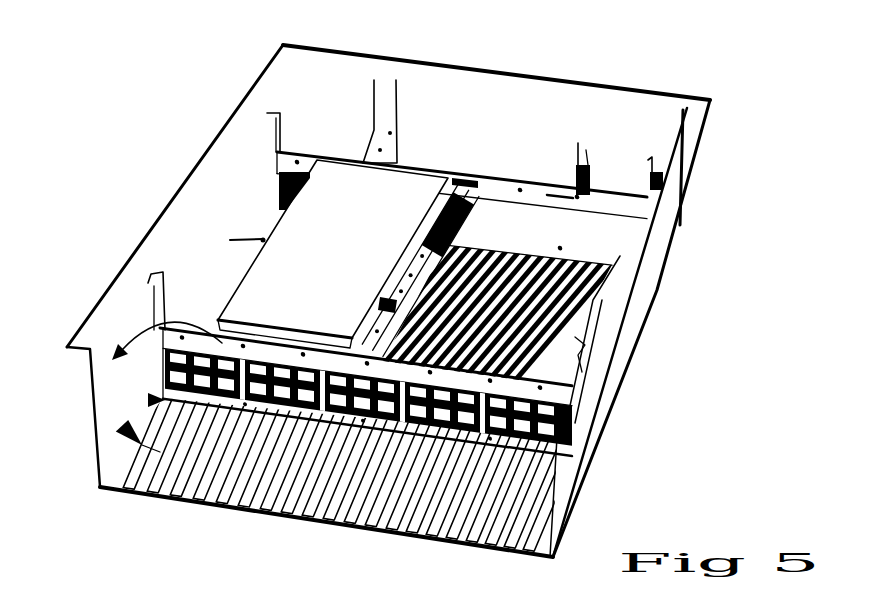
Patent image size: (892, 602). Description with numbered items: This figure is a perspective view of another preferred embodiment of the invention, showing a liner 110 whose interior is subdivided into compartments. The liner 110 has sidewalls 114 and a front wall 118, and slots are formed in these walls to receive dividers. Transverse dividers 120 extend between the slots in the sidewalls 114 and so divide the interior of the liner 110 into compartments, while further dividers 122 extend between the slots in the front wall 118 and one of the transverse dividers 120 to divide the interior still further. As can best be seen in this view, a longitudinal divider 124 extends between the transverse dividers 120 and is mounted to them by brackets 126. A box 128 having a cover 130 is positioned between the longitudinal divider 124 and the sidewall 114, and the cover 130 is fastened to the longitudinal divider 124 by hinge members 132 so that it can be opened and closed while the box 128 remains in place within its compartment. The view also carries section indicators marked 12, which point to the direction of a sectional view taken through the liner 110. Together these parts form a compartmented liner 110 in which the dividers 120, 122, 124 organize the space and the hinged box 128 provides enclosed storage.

The view direction indicator 12 is at (406, 260).
The liner 110 is at (465, 333).
The sidewalls 114 is at (386, 301).
The front wall 118 is at (496, 53).
The dividers 120 is at (440, 285).
The dividers 122 is at (462, 166).
The longitudinal divider 124 is at (451, 270).
The brackets 126 is at (492, 158).
The box 128 is at (262, 299).
The cover 130 is at (286, 208).
The hinge members 132 is at (349, 289).